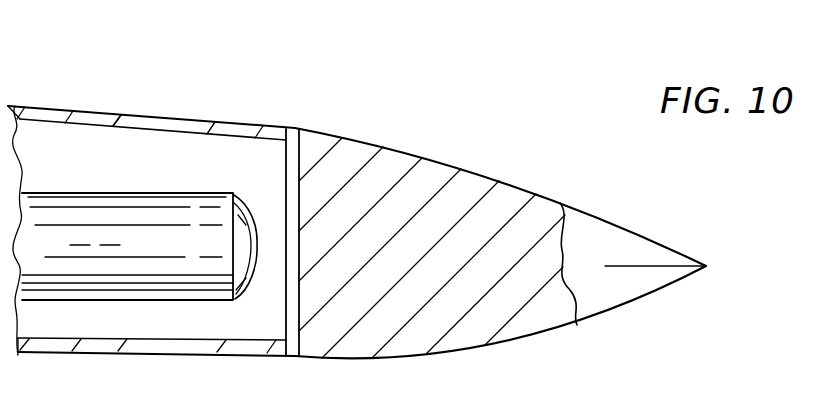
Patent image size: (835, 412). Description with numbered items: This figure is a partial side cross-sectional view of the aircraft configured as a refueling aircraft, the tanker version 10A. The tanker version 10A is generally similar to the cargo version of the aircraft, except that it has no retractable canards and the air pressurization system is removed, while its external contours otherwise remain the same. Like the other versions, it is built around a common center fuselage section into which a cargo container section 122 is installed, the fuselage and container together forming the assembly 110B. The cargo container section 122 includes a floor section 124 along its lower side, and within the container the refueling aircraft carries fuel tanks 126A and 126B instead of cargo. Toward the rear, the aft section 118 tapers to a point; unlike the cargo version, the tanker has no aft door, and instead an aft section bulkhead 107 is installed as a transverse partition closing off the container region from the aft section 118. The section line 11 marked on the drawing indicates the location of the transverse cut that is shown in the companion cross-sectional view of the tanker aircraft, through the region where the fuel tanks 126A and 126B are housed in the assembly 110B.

The tanker version aircraft 10A is at (487, 143).
The section line 11 is at (153, 410).
The bulkhead 107 is at (281, 330).
The assembly 110B is at (45, 99).
The aft section 118 is at (681, 246).
The cargo container section 122 is at (98, 172).
The floor section 124 is at (178, 348).
The fuel tank 126A is at (157, 193).
The fuel tank 126B is at (203, 104).